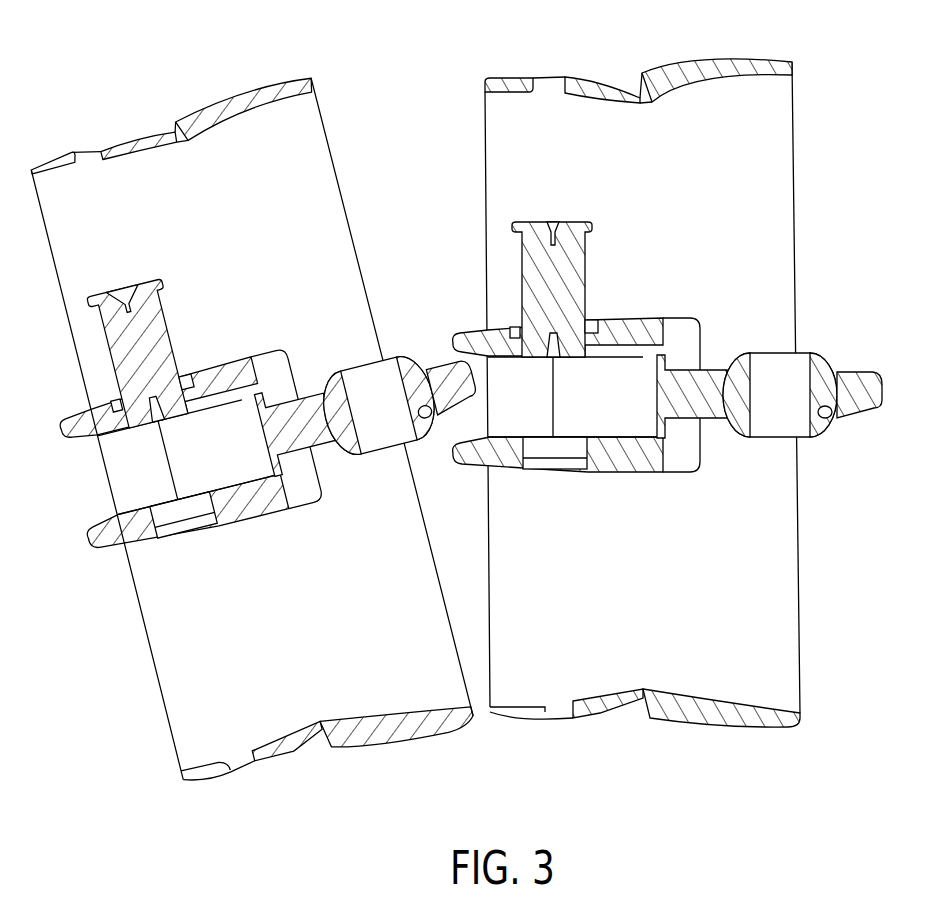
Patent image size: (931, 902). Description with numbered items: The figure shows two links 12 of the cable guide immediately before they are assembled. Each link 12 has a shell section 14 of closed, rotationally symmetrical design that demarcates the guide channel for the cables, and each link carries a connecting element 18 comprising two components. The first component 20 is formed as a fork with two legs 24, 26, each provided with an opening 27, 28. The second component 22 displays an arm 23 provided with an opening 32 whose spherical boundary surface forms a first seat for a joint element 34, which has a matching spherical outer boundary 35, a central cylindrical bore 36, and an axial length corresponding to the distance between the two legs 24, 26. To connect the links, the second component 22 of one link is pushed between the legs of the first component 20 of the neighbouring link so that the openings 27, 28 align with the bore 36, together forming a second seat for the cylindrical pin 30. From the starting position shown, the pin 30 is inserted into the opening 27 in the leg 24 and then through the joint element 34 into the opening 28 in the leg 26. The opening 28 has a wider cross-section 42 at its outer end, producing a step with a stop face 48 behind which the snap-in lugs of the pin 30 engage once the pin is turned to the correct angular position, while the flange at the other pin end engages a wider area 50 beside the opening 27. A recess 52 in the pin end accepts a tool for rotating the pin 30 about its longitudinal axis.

The link 12 is at (794, 183).
The shell section 14 is at (727, 62).
The connecting element 18 is at (330, 473).
The first component 20 is at (219, 313).
The second component 22 is at (388, 470).
The arm 23 is at (710, 370).
The leg 24 is at (502, 457).
The leg 26 is at (610, 323).
The opening 27 is at (590, 328).
The opening 28 is at (565, 448).
The cylindrical pin 30 is at (106, 332).
The opening 32 is at (835, 418).
The joint element 34 is at (342, 434).
The spherical outer boundary 35 is at (823, 436).
The bore 36 is at (798, 362).
The wider cross-section 42 is at (182, 522).
The stop face 48 is at (158, 280).
The wider area 50 is at (113, 402).
The recess 52 is at (551, 226).